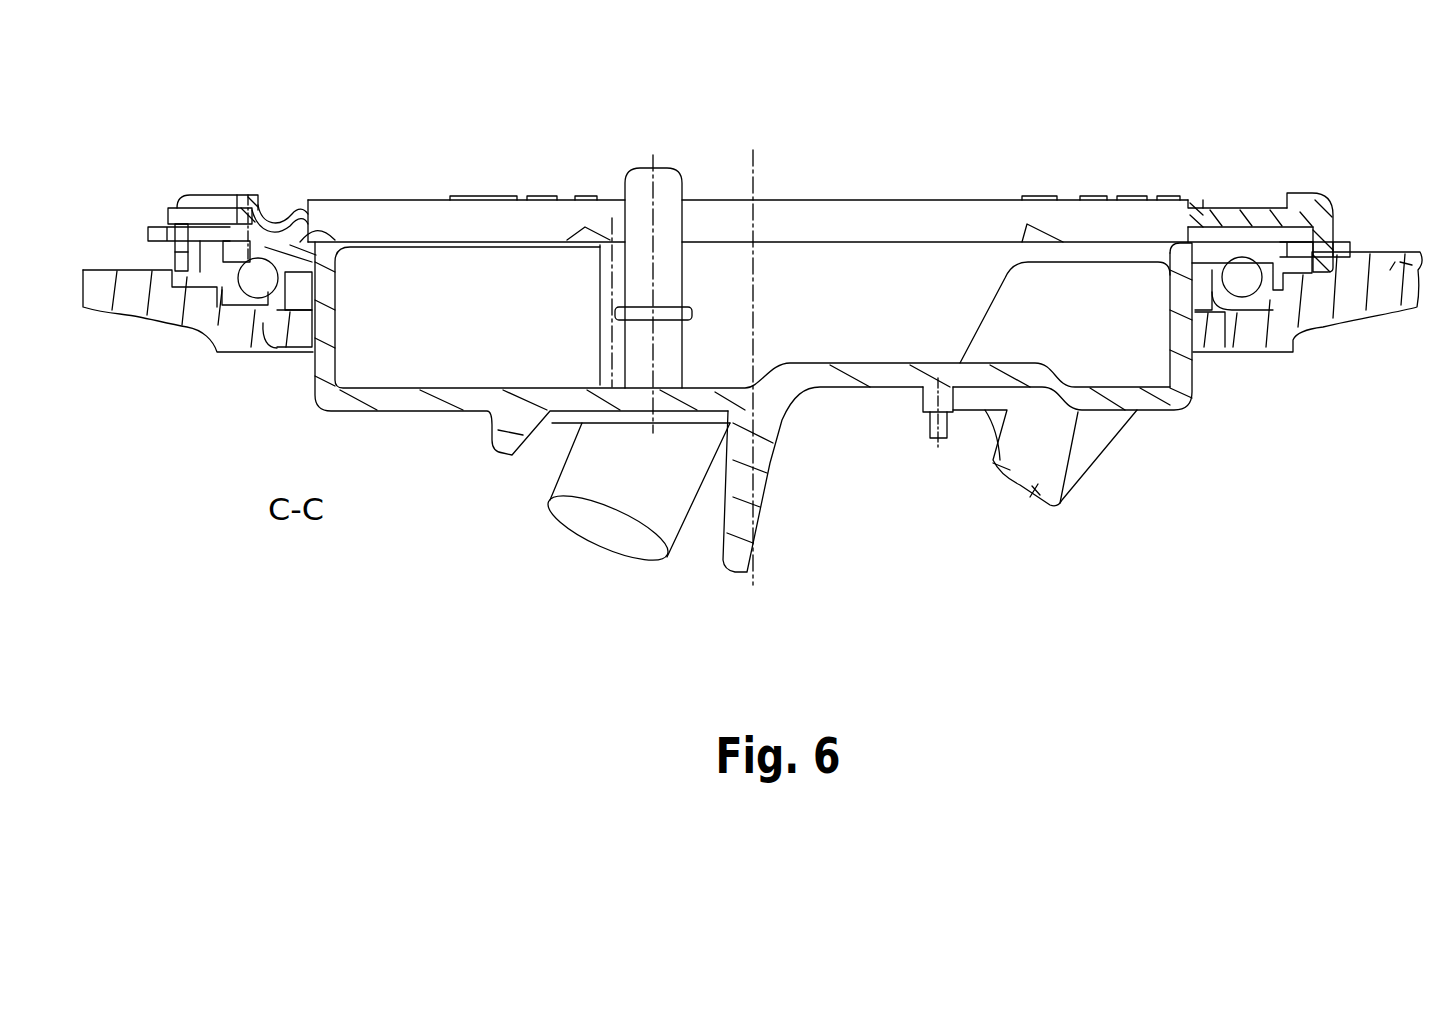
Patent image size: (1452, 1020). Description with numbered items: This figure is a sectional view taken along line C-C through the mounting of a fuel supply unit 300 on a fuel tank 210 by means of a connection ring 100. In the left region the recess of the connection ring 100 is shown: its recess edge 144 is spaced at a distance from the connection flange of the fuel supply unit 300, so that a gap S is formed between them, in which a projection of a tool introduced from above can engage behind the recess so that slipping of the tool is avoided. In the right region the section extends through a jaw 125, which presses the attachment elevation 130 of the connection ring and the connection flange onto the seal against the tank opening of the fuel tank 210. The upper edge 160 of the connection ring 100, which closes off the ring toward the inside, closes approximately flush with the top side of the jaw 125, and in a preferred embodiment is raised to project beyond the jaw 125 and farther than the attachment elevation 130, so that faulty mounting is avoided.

The connection ring 100 is at (307, 202).
The jaw 125 is at (230, 207).
The attachment elevation 130 is at (1248, 217).
The recess edge 144 is at (208, 216).
The upper edge 160 is at (1190, 186).
The fuel tank 210 is at (207, 313).
The fuel supply unit 300 is at (420, 318).
The gap S is at (150, 238).